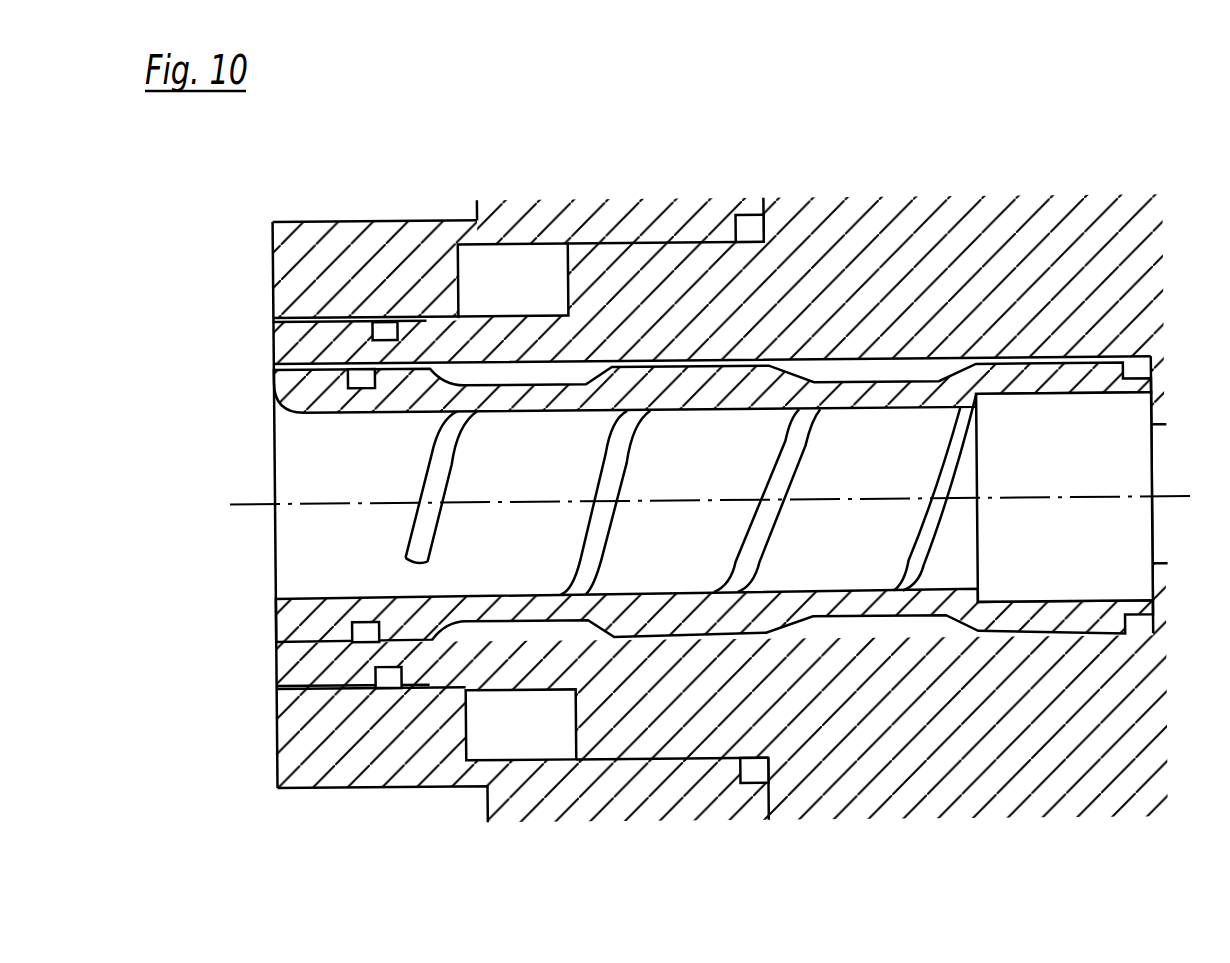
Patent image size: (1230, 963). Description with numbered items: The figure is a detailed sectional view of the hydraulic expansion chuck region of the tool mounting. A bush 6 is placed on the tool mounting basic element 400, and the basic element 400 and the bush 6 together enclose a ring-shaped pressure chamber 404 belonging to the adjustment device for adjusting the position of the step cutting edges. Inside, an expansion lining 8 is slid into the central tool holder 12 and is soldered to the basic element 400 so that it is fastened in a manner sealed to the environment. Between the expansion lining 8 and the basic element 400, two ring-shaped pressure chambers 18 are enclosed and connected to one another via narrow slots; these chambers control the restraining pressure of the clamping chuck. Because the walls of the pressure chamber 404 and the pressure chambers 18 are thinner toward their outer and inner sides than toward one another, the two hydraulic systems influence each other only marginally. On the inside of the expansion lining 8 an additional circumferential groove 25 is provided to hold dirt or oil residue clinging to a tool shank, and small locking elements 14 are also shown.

The bush 6 is at (347, 245).
The expansion lining 8 is at (305, 400).
The central tool holder 12 is at (358, 470).
The locking pin 14 is at (384, 328).
The pressure chambers 18 is at (473, 632).
The circumferential groove 25 is at (509, 528).
The tool mounting basic element 400 is at (660, 288).
The pressure chamber 404 is at (508, 268).